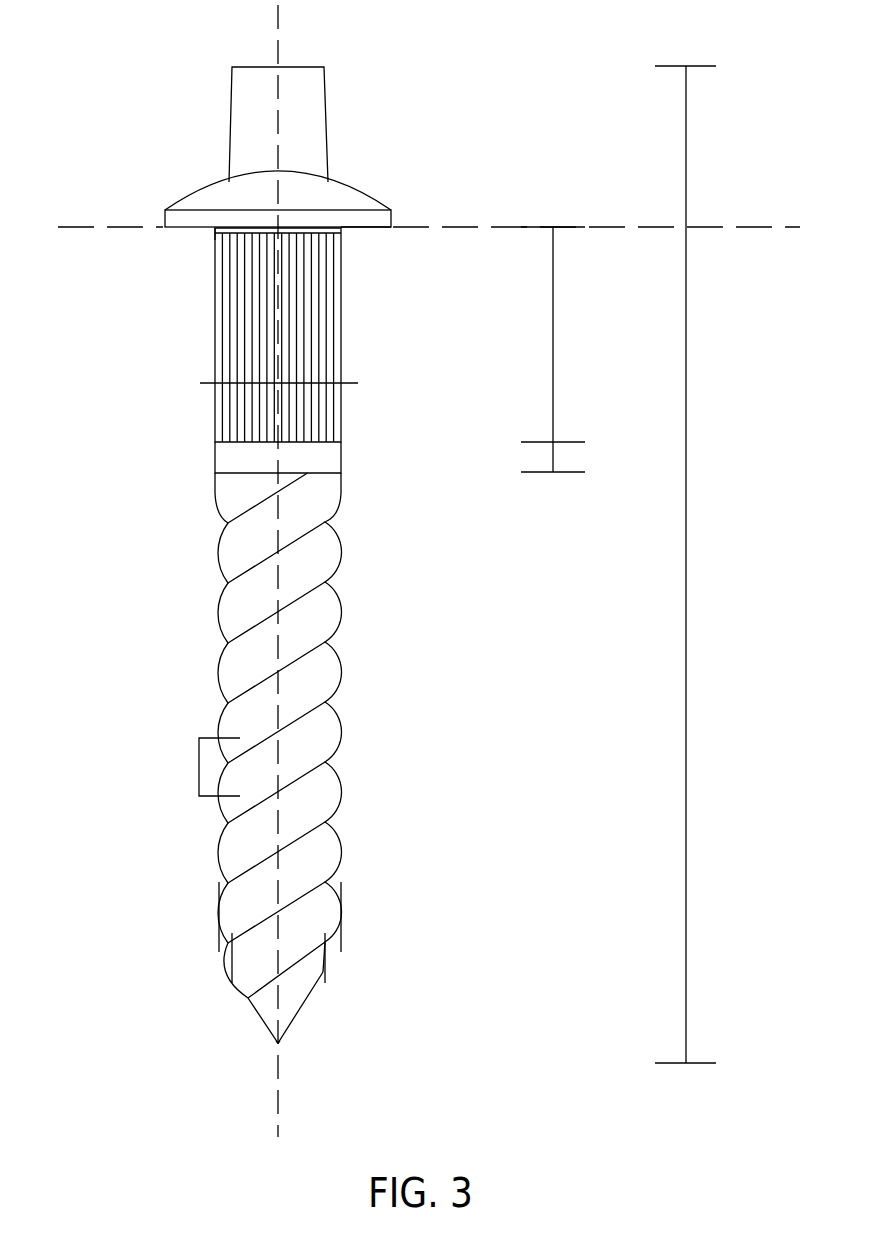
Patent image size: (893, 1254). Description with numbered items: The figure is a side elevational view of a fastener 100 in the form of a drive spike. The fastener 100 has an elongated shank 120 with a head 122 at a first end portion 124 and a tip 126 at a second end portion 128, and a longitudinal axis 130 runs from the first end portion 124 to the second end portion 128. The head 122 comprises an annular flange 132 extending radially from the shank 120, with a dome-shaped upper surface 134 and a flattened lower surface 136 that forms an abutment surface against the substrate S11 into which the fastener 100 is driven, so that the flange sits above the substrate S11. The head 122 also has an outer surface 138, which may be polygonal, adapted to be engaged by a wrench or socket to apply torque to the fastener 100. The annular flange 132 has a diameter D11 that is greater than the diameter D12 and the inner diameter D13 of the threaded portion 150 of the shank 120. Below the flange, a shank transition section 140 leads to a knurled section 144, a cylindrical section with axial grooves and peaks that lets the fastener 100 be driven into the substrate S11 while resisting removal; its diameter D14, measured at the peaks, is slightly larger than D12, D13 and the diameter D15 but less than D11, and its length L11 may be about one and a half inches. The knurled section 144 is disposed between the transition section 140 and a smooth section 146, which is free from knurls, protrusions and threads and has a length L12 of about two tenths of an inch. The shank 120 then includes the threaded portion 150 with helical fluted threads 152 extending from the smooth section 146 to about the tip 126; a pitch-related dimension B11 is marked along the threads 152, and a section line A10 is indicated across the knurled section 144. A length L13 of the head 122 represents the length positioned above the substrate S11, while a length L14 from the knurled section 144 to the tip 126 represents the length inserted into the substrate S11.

The fastener 100 is at (500, 570).
The elongated shank 120 is at (428, 658).
The head 122 is at (382, 162).
The first end portion 124 is at (352, 64).
The tip 126 is at (298, 1013).
The second end portion 128 is at (356, 1023).
The longitudinal axis 130 is at (278, 1068).
The annular flange 132 is at (382, 220).
The dome-shaped upper surface 134 is at (202, 182).
The flattened lower surface 136 is at (375, 230).
The outer surface 138 is at (309, 120).
The shank transition section 140 is at (213, 230).
The knurled section 144 is at (307, 322).
The smooth section 146 is at (323, 457).
The threaded portion 150 is at (396, 752).
The threads 152 is at (341, 546).
The section line A10 is at (279, 383).
The thread pitch B11 is at (199, 768).
The diameter of the annular flange D11 is at (163, 212).
The diameter of the threaded portion D12 is at (343, 895).
The inner diameter D13 is at (327, 978).
The diameter of the knurled section D14 is at (240, 319).
The diameter of the smooth section D15 is at (235, 458).
The length of the knurled section L11 is at (553, 340).
The length of the smooth section L12 is at (553, 455).
The length of the head L13 is at (686, 162).
The length of the shank L14 is at (686, 706).
The substrate S11 is at (435, 244).